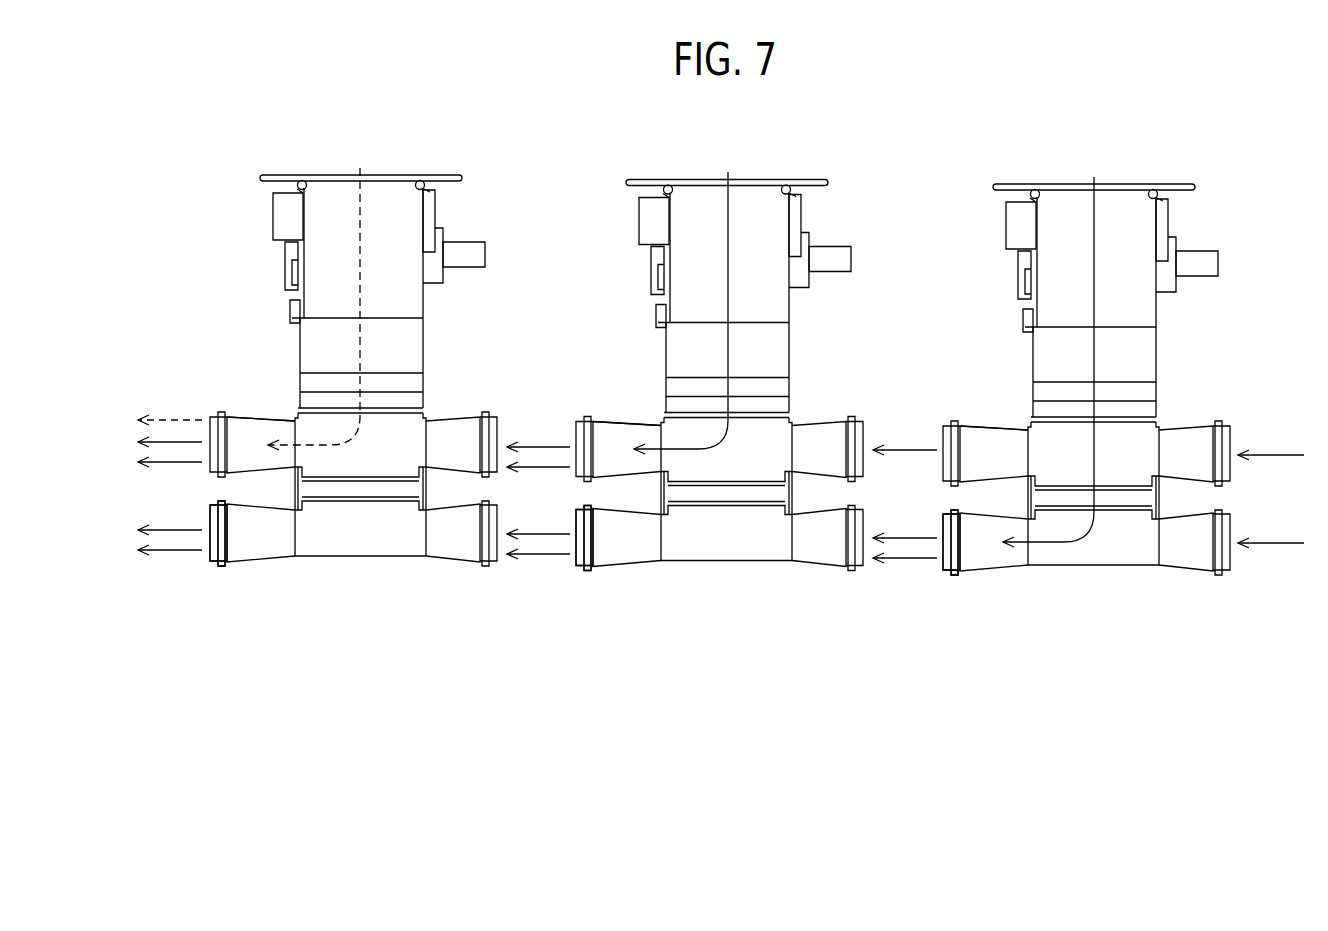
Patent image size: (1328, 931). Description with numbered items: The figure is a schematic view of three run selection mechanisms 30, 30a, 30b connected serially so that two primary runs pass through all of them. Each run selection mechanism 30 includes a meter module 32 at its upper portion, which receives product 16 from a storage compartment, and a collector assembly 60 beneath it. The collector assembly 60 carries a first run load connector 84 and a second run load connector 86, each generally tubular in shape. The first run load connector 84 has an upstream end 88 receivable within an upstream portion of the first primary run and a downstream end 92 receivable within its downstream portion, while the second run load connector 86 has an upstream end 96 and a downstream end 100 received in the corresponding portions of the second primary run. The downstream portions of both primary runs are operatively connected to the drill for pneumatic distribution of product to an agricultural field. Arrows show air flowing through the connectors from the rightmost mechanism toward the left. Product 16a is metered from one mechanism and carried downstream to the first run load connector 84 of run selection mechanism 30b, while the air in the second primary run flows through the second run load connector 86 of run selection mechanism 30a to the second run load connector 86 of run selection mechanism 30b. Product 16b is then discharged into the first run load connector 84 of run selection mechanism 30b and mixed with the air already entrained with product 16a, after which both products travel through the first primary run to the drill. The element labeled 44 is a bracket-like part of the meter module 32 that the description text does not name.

The run selection mechanism 30b is at (317, 153).
The run selection mechanism 30a is at (685, 160).
The run selection mechanism 30 is at (1052, 163).
The product 16b is at (363, 166).
The product 16a is at (731, 172).
The product 16 is at (1097, 176).
The meter module 32 is at (427, 294).
The mounting arm 44 is at (463, 267).
The collector assembly 60 is at (361, 560).
The first run load connector 84 is at (266, 416).
The upstream end 88 is at (441, 420).
The second run load connector 86 is at (264, 558).
The upstream end 96 is at (442, 561).
The downstream end 92 is at (235, 422).
The downstream end 100 is at (233, 559).